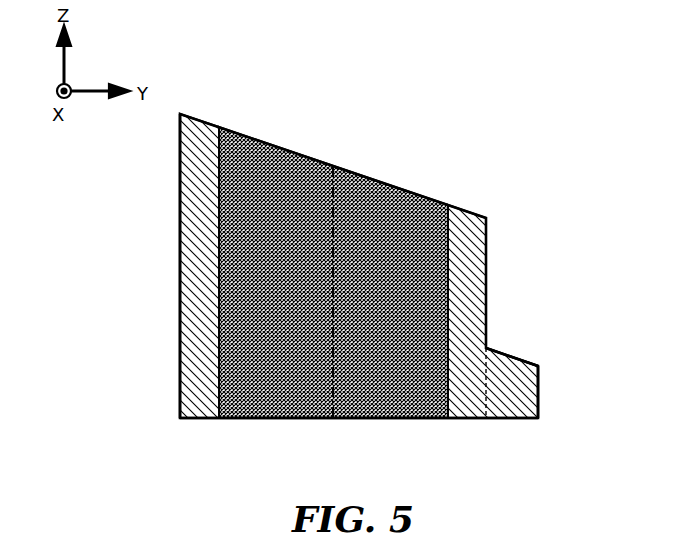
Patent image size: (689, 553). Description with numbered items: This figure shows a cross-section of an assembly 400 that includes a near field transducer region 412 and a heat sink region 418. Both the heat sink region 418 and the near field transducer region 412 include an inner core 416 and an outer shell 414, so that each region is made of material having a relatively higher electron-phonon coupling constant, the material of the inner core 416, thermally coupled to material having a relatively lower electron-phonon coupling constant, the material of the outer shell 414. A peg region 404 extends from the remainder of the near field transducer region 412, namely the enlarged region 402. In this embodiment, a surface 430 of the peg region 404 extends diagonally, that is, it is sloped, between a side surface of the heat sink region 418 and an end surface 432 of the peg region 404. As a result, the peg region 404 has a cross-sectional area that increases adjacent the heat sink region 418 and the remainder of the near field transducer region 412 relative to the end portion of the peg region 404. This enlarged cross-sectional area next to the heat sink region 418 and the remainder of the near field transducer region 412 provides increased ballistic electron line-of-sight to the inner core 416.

The assembly 400 is at (178, 88).
The enlarged region 402 is at (208, 430).
The peg region 404 is at (517, 382).
The near field transducer region 412 is at (164, 386).
The outer shell 414 is at (460, 280).
The inner core 416 is at (277, 197).
The heat sink region 418 is at (166, 210).
The surface of the peg region 430 is at (488, 350).
The end surface 432 is at (540, 410).